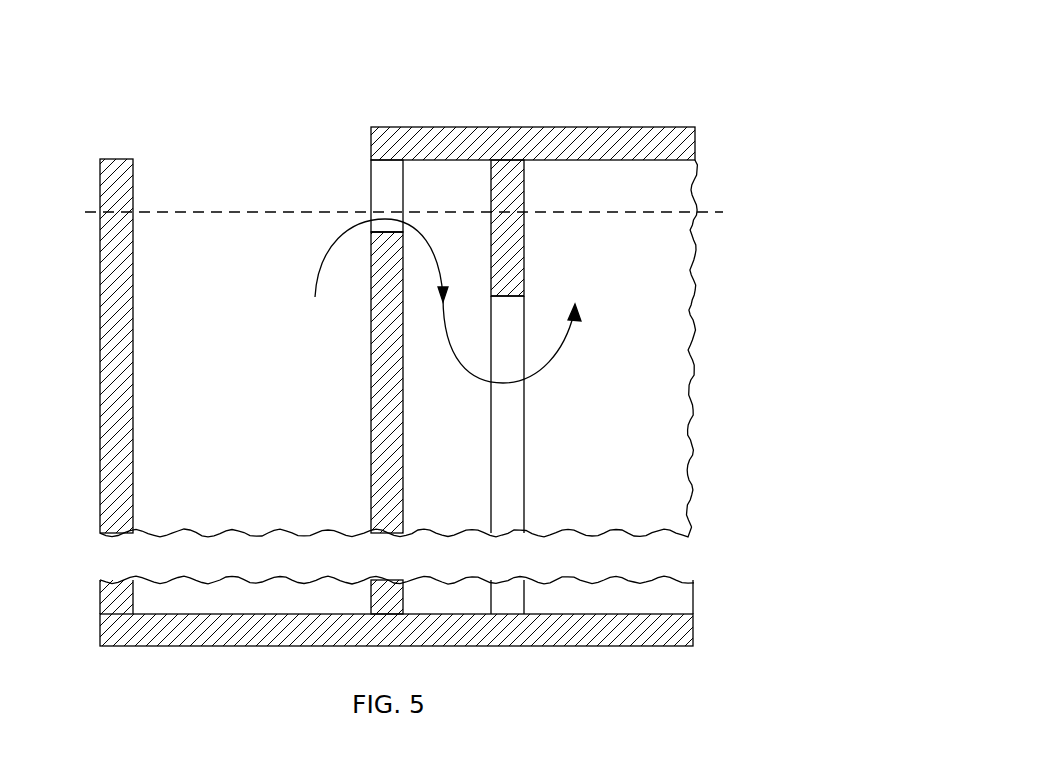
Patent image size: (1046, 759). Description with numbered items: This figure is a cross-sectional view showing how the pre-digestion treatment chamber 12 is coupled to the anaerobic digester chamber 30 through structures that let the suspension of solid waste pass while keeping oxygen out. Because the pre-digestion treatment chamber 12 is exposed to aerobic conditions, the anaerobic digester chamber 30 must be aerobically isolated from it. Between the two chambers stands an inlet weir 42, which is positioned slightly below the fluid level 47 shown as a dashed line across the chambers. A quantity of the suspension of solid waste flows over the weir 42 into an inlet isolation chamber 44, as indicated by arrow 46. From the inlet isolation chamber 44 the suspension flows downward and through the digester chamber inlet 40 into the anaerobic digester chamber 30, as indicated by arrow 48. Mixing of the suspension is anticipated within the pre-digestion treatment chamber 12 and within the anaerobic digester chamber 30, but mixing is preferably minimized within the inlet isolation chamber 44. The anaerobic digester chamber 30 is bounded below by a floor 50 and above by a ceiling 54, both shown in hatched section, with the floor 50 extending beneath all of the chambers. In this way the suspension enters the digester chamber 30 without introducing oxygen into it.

The pre-digestion treatment chamber 12 is at (266, 453).
The anaerobic digester chamber 30 is at (615, 453).
The digester chamber inlet 40 is at (519, 453).
The inlet weir 42 is at (388, 243).
The inlet isolation chamber 44 is at (458, 453).
The arrow 46 is at (335, 240).
The fluid level 47 is at (182, 212).
The arrow 48 is at (547, 372).
The floor 50 is at (600, 633).
The ceiling 54 is at (595, 143).